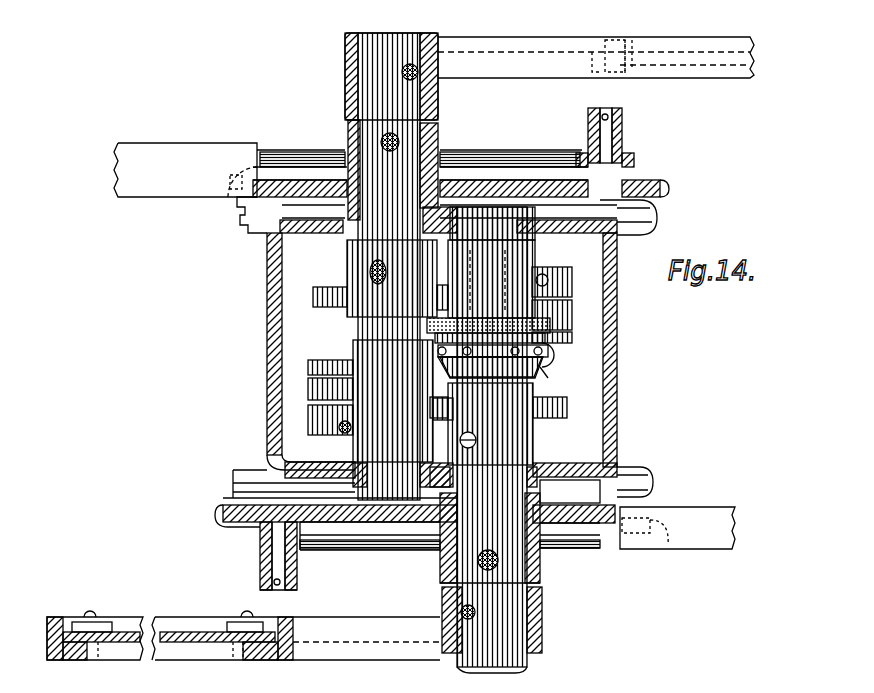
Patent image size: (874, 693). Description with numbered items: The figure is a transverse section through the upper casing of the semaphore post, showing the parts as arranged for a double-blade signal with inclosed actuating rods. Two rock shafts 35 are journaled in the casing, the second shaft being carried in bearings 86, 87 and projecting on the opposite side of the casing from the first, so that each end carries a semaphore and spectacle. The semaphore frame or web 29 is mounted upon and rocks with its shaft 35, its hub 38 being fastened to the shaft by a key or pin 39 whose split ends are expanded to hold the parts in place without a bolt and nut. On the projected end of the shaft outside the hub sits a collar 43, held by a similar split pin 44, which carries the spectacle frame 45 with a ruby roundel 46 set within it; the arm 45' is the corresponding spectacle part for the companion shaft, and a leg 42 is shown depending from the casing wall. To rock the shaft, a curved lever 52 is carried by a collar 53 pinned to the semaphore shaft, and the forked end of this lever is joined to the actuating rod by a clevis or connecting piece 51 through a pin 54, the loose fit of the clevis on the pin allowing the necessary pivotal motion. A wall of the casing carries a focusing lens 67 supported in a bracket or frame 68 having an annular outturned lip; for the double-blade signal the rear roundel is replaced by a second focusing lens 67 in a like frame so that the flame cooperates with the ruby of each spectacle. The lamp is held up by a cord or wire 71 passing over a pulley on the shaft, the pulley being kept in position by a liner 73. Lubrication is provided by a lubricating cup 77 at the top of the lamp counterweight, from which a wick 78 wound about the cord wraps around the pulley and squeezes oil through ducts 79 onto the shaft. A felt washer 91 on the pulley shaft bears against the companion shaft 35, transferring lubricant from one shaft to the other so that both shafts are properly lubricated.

The rock shaft 35 is at (377, 99).
The bearing 87 is at (330, 220).
The focusing lens 67 is at (557, 165).
The arm 45' is at (596, 76).
The bracket or frame 68 is at (652, 232).
The curved lever 52 is at (318, 286).
The liner 73 is at (540, 265).
The clevis or connecting piece 51 is at (572, 313).
The felt washer 91 is at (430, 330).
The lubricating cup 77 is at (549, 352).
The wick 78 is at (541, 376).
The cord or wire 71 is at (514, 373).
The ducts 79 is at (491, 367).
The semaphore frame or web 29 is at (490, 356).
The bearing 86 is at (280, 458).
The pin 54 is at (343, 432).
The collar 53 is at (480, 438).
The leg 42 is at (300, 582).
The key or pin 39 is at (443, 582).
The split pin 44 is at (461, 612).
The hub 38 is at (540, 578).
The collar 43 is at (542, 652).
The ruby roundel 46 is at (187, 632).
The spectacle frame 45 is at (214, 648).